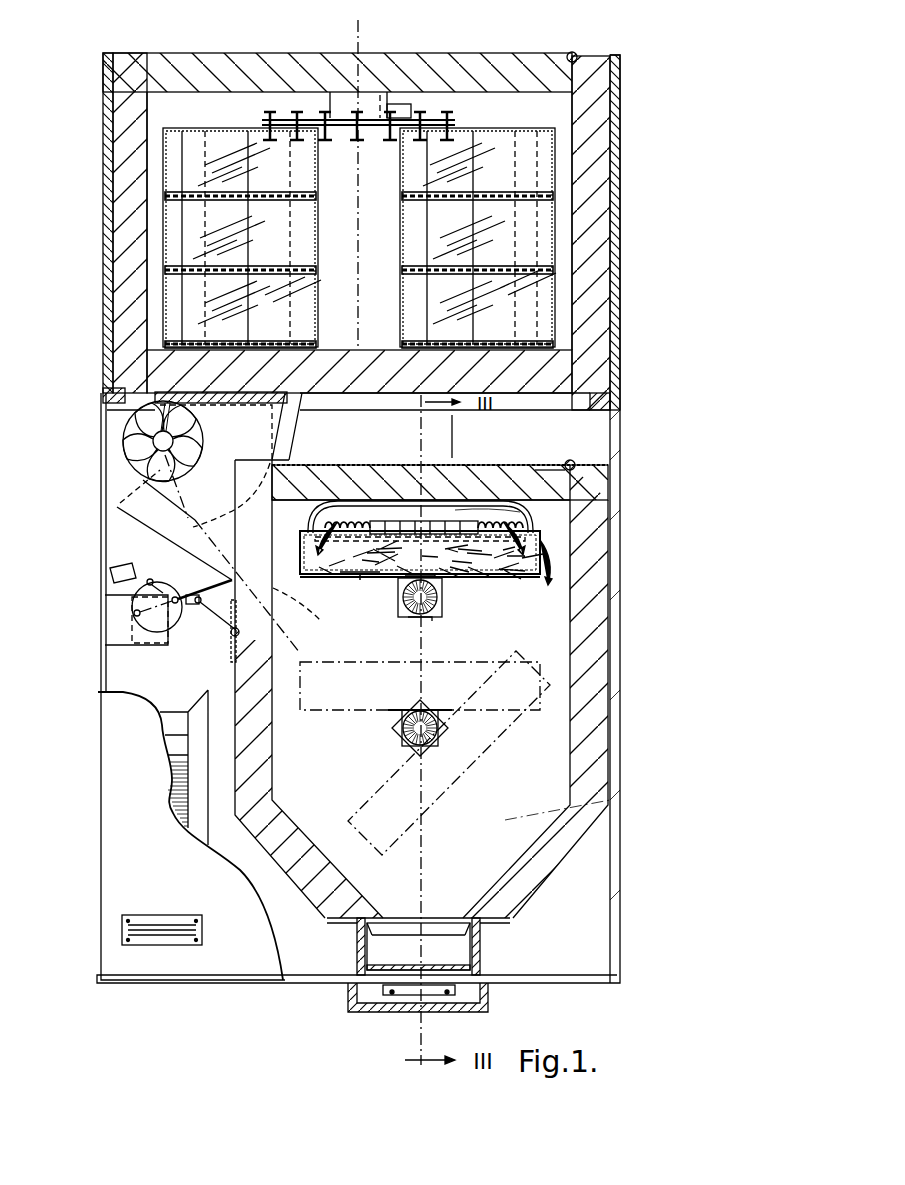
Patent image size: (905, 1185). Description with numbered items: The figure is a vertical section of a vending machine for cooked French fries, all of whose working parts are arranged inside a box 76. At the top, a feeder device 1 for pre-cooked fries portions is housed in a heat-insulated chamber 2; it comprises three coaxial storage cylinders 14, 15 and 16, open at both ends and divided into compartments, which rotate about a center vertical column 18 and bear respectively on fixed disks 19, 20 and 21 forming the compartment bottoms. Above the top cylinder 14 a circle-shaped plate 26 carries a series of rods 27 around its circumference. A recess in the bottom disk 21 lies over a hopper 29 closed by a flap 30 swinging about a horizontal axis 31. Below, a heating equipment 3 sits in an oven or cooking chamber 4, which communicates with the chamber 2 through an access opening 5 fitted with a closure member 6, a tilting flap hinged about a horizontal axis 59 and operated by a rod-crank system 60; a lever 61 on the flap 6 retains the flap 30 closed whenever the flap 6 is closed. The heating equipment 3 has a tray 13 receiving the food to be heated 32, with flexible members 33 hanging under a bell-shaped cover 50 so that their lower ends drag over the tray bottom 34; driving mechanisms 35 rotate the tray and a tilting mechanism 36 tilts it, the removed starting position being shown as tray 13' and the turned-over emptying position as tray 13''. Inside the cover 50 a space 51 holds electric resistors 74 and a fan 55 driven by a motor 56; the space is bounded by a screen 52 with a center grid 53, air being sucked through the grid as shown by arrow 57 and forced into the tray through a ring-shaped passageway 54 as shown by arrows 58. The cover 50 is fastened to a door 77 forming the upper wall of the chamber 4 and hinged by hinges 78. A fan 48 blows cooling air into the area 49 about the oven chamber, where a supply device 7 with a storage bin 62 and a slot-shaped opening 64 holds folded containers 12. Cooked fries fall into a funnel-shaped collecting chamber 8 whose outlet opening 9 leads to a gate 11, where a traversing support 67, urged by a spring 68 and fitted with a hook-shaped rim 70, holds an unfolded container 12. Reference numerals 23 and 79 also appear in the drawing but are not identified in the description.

The feeder device 1 is at (520, 75).
The heat-insulated chamber 2 is at (600, 128).
The heating equipment 3 is at (560, 585).
The oven or cooking chamber 4 is at (598, 710).
The access opening 5 is at (276, 590).
The closure member 6 is at (250, 530).
The supply device 7 is at (185, 700).
The collecting chamber 8 is at (588, 808).
The outlet opening 9 is at (425, 915).
The gate 11 is at (470, 952).
The container 12 is at (190, 772).
The tray 13 is at (429, 577).
The tray in removed position 13' is at (420, 710).
The tray in turned-over position 13'' is at (449, 753).
The top storage cylinder 14 is at (540, 132).
The storage cylinder 15 is at (560, 225).
The storage cylinder 16 is at (555, 320).
The center vertical column 18 is at (412, 100).
The fixed disk 19 is at (255, 193).
The fixed disk 20 is at (215, 262).
The fixed bottom disk 21 is at (210, 342).
The exhaust duct 23 is at (325, 97).
The circle-shaped plate 26 is at (372, 115).
The rods 27 is at (262, 122).
The hopper 29 is at (190, 372).
The flap 30 is at (245, 393).
The horizontal axis 31 is at (130, 410).
The food to be heated 32 is at (482, 580).
The flexible members 33 is at (318, 558).
The tray bottom 34 is at (370, 582).
The driving mechanisms 35 is at (445, 606).
The tilting mechanism 36 is at (410, 616).
The fan 48 is at (205, 435).
The area 49 is at (193, 686).
The bell-shaped cover 50 is at (570, 460).
The space 51 is at (560, 470).
The screen 52 is at (360, 530).
The center grid 53 is at (470, 520).
The ring-shaped passageway 54 is at (294, 482).
The fan 55 is at (400, 525).
The motor 56 is at (422, 730).
The arrow 57 is at (440, 525).
The arrows 58 is at (318, 530).
The horizontal axis 59 is at (231, 633).
The rod-crank system 60 is at (130, 613).
The lever 61 is at (280, 428).
The storage bin 62 is at (200, 800).
The opening 64 is at (158, 942).
The traversing support 67 is at (345, 985).
The spring 68 is at (447, 994).
The rim 70 is at (356, 938).
The electric resistors 74 is at (575, 463).
The box 76 is at (620, 270).
The door 77 is at (575, 500).
The hinges 78 is at (600, 412).
The air passage 79 is at (560, 545).